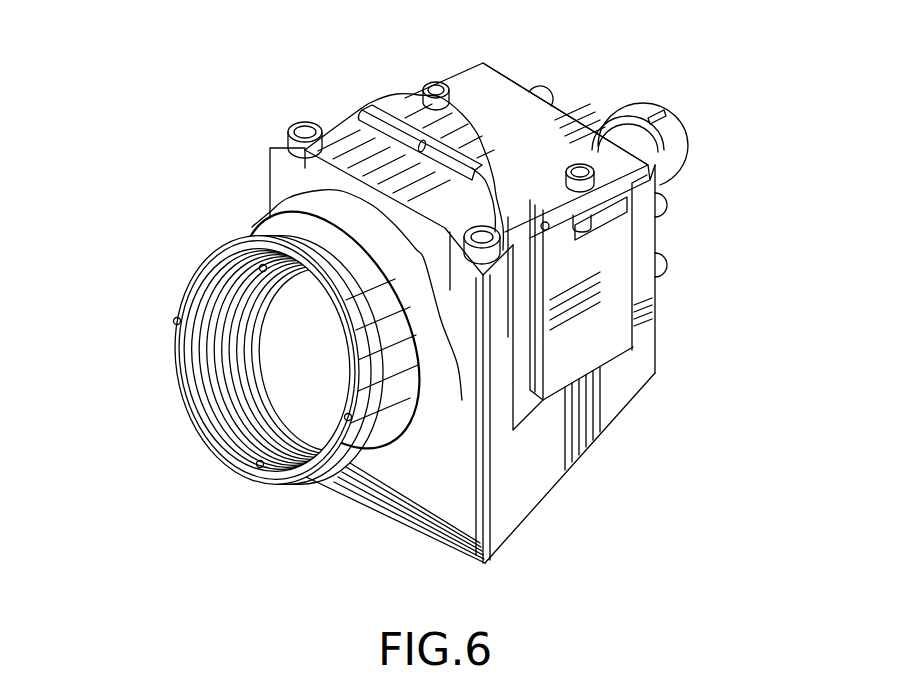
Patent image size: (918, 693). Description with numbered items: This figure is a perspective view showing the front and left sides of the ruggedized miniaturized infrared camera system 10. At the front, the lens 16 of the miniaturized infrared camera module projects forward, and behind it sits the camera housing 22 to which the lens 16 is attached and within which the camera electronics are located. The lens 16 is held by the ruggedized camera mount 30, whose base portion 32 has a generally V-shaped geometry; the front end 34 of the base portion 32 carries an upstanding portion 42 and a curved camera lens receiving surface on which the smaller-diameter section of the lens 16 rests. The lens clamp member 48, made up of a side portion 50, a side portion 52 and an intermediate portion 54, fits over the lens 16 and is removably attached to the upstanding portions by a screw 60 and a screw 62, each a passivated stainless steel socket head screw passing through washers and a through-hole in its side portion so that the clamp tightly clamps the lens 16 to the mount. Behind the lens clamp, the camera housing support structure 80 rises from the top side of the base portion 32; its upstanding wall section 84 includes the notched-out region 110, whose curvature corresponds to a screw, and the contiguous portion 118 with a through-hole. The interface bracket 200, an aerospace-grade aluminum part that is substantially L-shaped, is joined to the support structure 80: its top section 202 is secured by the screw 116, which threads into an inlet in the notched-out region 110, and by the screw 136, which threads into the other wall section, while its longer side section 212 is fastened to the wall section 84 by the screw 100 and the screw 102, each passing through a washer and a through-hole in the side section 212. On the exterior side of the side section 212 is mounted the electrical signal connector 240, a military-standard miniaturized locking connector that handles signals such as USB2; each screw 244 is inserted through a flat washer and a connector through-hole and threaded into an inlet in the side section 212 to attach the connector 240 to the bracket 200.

The ruggedized miniaturized infrared camera system 10 is at (128, 122).
The lens 16 is at (245, 242).
The camera housing 22 is at (372, 102).
The ruggedized camera mount 30 is at (580, 463).
The base portion 32 is at (517, 529).
The front end 34 is at (415, 497).
The upstanding portion 42 is at (497, 395).
The lens clamp member 48 is at (369, 155).
The side portion 50 is at (505, 292).
The side portion 52 is at (270, 188).
The intermediate portion 54 is at (395, 182).
The screw 60 is at (469, 242).
The screw 62 is at (288, 132).
The camera housing support structure 80 is at (623, 335).
The upstanding wall section 84 is at (583, 353).
The screw 100 is at (662, 205).
The screw 102 is at (662, 266).
The notched-out region 110 is at (610, 212).
The screw 116 is at (580, 160).
The portion 118 is at (556, 248).
The screw 136 is at (434, 80).
The interface bracket 200 is at (510, 67).
The top section 202 is at (478, 88).
The side section 212 is at (651, 307).
The electrical signal connector 240 is at (684, 137).
The screw 244 is at (542, 88).